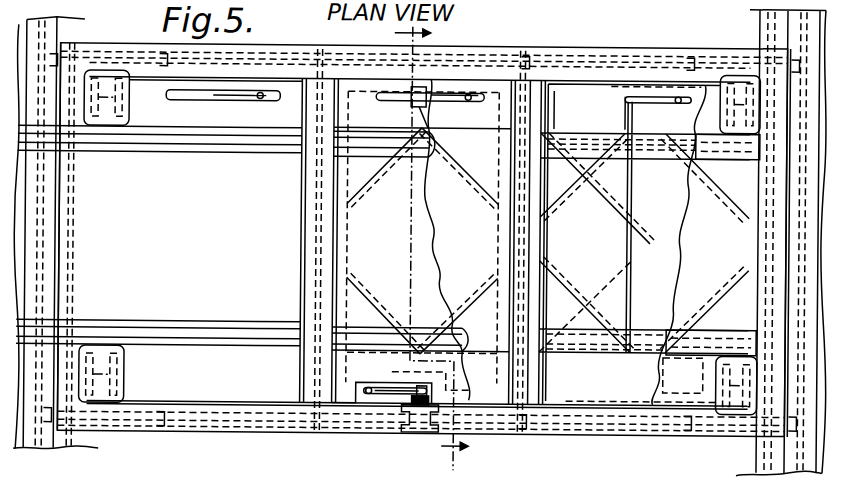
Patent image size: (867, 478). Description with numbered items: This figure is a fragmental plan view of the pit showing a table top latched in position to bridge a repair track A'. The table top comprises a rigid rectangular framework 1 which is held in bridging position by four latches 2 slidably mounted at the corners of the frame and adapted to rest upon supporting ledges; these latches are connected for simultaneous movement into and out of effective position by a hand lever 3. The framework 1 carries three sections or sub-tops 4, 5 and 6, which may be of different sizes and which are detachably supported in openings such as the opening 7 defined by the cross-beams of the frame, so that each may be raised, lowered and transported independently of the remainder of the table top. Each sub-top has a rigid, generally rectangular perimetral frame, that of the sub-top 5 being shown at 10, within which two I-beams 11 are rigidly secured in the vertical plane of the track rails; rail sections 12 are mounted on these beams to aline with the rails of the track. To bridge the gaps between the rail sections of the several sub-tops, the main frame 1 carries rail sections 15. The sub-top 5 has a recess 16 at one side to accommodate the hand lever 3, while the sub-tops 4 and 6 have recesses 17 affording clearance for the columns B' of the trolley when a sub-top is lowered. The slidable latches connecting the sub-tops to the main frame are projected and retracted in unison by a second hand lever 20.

The rigid rectangular framework 1 is at (620, 50).
The latch 2 is at (43, 446).
The hand lever 3 is at (368, 395).
The sub-top 4 is at (215, 175).
The sub-top 5 is at (422, 247).
The sub-top 6 is at (650, 245).
The opening 7 is at (438, 248).
The perimetral frame 10 is at (455, 88).
The I-beam 11 is at (413, 241).
The rail section 12 is at (430, 158).
The rail section 15 is at (301, 152).
The recess 16 is at (393, 372).
The recess 17 is at (128, 108).
The hand lever 20 is at (270, 98).
The repair track A' is at (414, 295).
The column B' is at (421, 247).